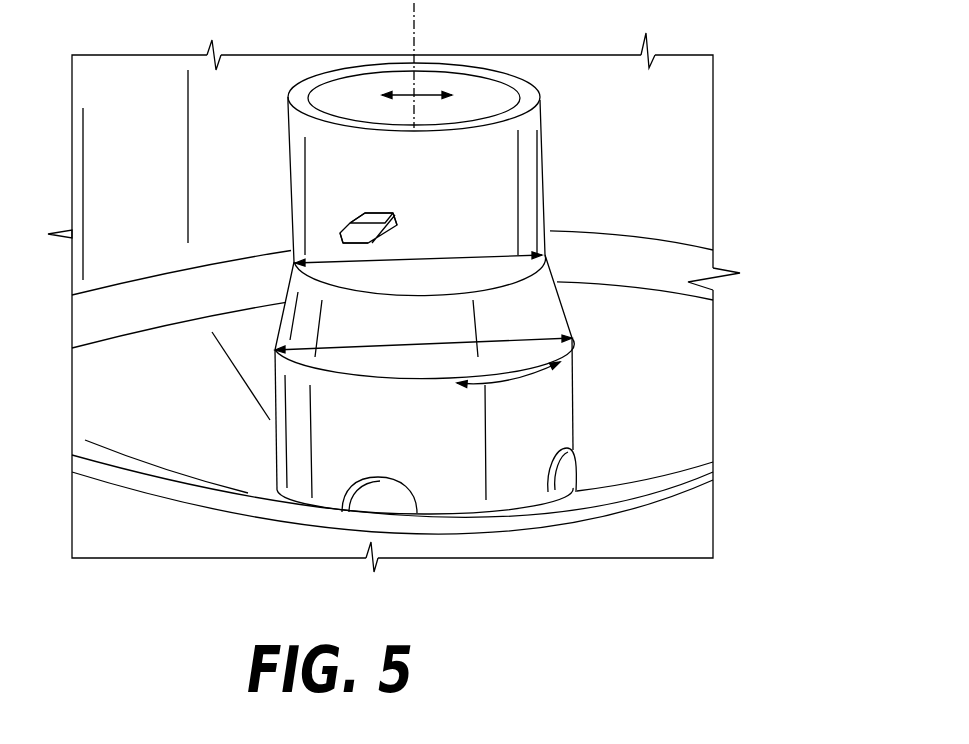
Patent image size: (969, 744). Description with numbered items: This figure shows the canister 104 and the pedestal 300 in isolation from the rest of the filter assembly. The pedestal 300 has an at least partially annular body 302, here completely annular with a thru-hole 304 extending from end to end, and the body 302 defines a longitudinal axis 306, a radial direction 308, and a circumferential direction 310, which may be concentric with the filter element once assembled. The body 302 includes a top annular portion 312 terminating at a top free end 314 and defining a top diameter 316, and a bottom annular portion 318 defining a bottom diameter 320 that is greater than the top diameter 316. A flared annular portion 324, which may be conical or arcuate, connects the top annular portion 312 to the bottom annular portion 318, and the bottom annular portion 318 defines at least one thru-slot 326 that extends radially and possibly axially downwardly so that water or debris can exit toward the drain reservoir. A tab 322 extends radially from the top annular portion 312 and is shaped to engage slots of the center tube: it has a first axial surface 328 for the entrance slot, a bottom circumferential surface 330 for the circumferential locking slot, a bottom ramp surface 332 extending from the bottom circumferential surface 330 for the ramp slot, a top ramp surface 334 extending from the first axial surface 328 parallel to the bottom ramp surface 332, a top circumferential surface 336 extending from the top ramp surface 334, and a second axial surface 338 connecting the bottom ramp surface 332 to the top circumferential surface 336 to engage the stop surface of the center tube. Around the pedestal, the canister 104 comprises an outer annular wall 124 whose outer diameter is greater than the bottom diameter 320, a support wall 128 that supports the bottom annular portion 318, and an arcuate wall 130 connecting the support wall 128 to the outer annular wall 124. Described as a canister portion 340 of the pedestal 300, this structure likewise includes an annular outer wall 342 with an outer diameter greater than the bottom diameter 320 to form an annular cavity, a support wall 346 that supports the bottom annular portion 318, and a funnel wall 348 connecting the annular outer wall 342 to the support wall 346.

The canister 104 is at (768, 185).
The outer annular wall 124 is at (155, 184).
The support wall 128 is at (393, 512).
The arcuate wall 130 is at (696, 346).
The pedestal 300 is at (546, 208).
The annular body 302 is at (541, 101).
The thru-hole 304 is at (482, 80).
The longitudinal axis 306 is at (417, 32).
The radial direction 308 is at (410, 98).
The circumferential direction 310 is at (513, 379).
The top annular portion 312 is at (527, 146).
The top free end 314 is at (337, 64).
The top diameter 316 is at (424, 341).
The bottom annular portion 318 is at (560, 390).
The bottom diameter 320 is at (343, 350).
The tab 322 is at (397, 213).
The flared annular portion 324 is at (560, 282).
The thru-slot 326 is at (378, 488).
The first axial surface 328 is at (343, 240).
The bottom circumferential surface 330 is at (345, 245).
The bottom ramp surface 332 is at (393, 243).
The top ramp surface 334 is at (356, 222).
The top circumferential surface 336 is at (393, 212).
The second axial surface 338 is at (397, 224).
The canister portion 340 is at (673, 200).
The annular outer wall 342 is at (697, 88).
The support wall 346 is at (578, 485).
The funnel wall 348 is at (148, 386).